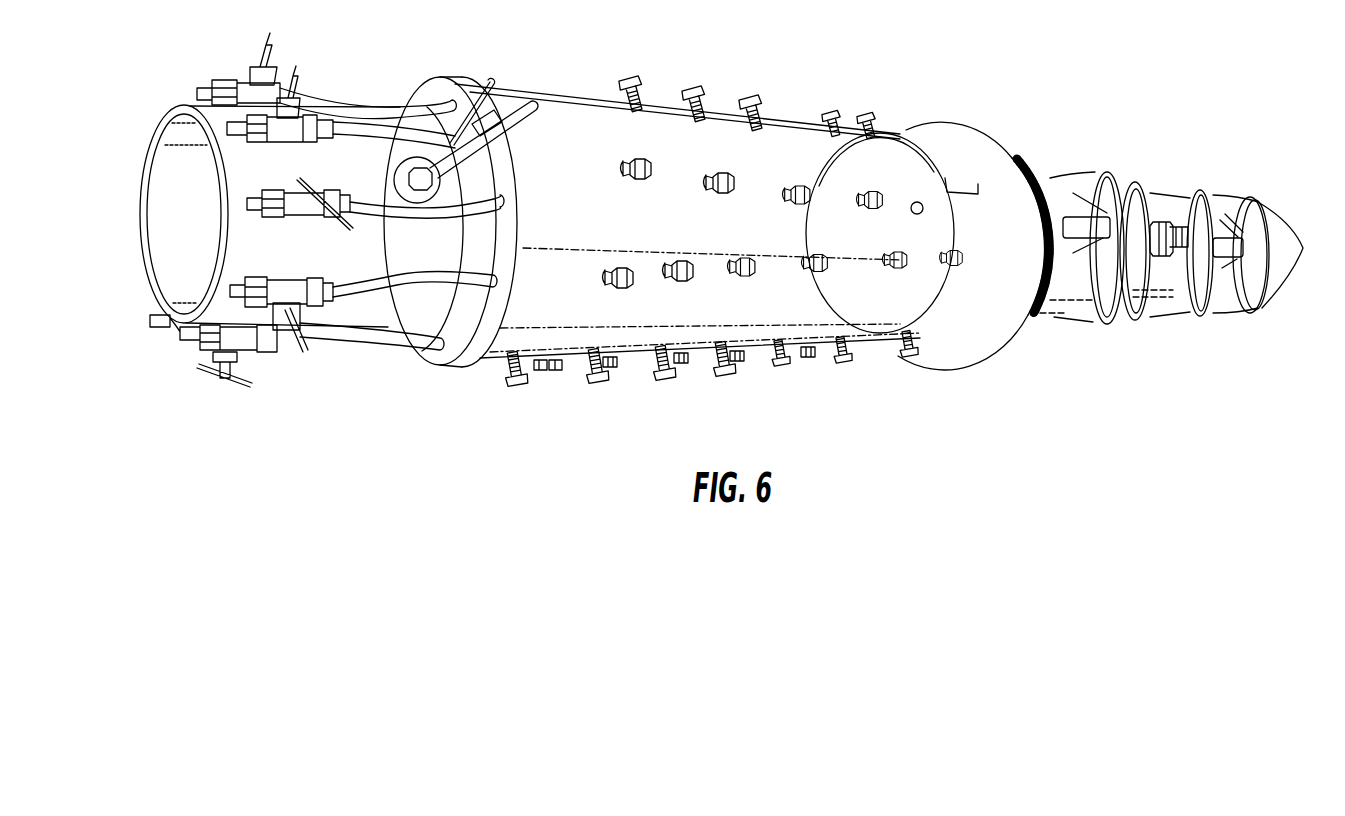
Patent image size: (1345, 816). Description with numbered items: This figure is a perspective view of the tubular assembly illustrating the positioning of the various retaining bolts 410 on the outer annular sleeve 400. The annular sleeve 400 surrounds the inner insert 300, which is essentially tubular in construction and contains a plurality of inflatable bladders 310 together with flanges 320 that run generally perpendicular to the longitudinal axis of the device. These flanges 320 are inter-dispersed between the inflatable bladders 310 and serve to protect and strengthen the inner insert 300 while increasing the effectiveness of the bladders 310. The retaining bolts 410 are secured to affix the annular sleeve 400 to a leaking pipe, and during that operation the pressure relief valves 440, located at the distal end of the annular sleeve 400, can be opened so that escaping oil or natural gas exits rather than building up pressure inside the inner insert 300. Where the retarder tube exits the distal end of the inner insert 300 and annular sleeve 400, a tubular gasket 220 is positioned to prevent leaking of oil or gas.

The tubular gasket 220 is at (453, 360).
The inner insert 300 is at (1223, 287).
The inflatable bladders 310 is at (1057, 278).
The flanges 320 is at (1173, 287).
The outer annular sleeve 400 is at (759, 317).
The retaining bolts 410 is at (597, 372).
The pressure relief valves 440 is at (405, 190).